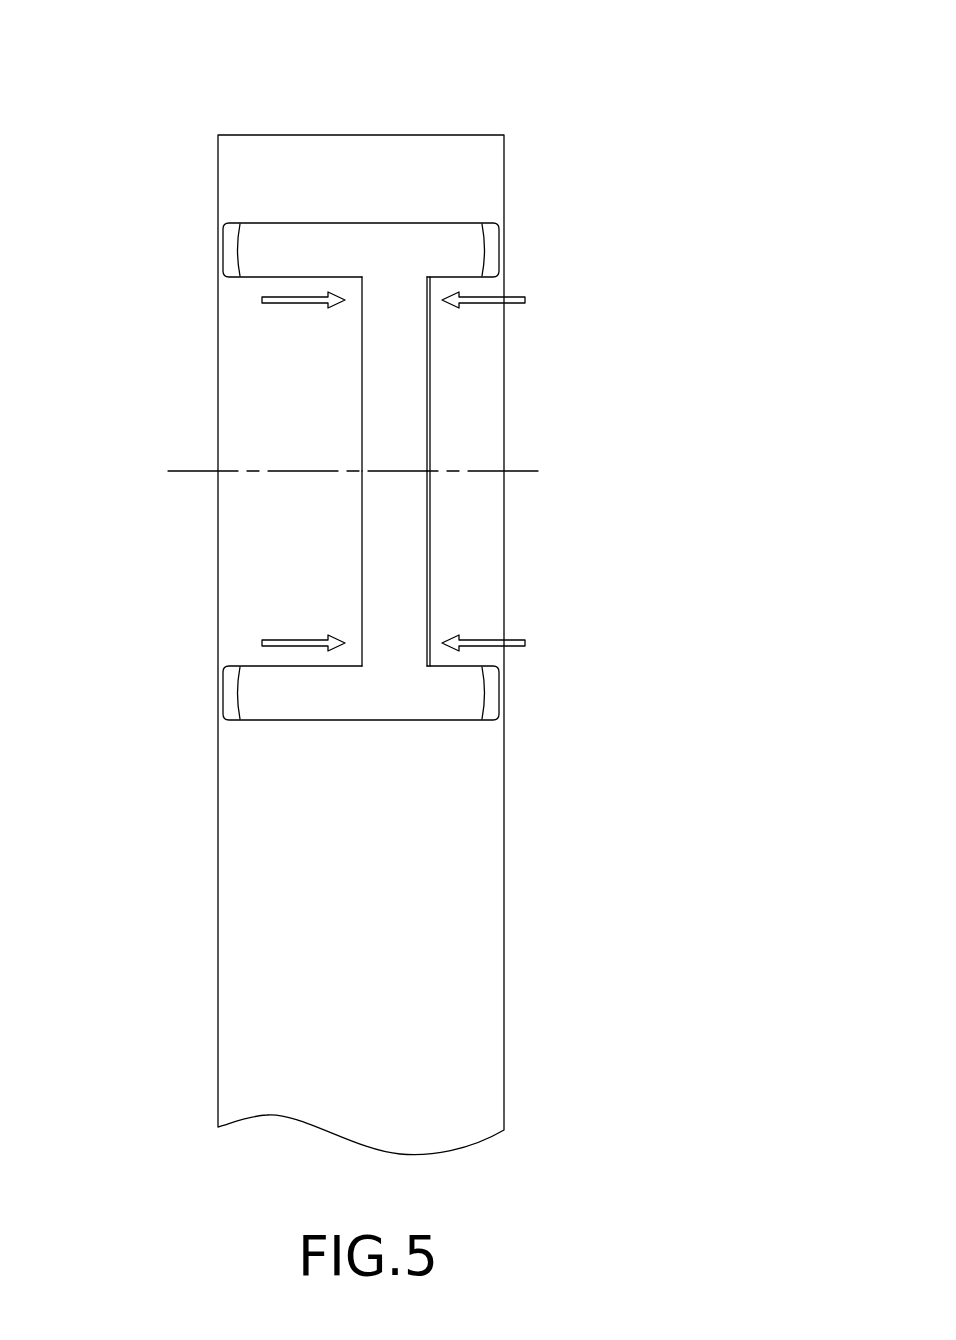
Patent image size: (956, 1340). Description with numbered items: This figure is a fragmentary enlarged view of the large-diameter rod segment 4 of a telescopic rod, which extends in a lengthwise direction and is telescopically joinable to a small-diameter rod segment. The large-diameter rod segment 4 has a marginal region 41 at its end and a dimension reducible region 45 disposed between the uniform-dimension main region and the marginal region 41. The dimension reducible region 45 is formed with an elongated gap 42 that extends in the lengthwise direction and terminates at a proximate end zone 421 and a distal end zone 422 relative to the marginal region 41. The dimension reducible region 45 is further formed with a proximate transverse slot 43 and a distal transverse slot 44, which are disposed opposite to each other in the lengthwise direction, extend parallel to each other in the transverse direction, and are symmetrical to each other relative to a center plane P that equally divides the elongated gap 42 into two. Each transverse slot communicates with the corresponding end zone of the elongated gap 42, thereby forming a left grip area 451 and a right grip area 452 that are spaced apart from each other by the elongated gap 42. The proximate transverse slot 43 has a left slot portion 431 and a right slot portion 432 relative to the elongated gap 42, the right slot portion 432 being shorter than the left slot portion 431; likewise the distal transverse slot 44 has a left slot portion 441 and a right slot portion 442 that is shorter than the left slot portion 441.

The large-diameter rod segment 4 is at (291, 123).
The marginal region 41 is at (437, 153).
The elongated gap 42 is at (382, 413).
The proximate end zone 421 is at (398, 285).
The distal end zone 422 is at (388, 667).
The proximate transverse slot 43 is at (373, 232).
The left slot portion 431 is at (257, 253).
The right slot portion 432 is at (473, 250).
The distal transverse slot 44 is at (388, 708).
The left slot portion 441 is at (293, 693).
The right slot portion 442 is at (452, 702).
The dimension reducible region 45 is at (470, 535).
The left grip area 451 is at (348, 527).
The right grip area 452 is at (443, 412).
The center plane P is at (523, 470).